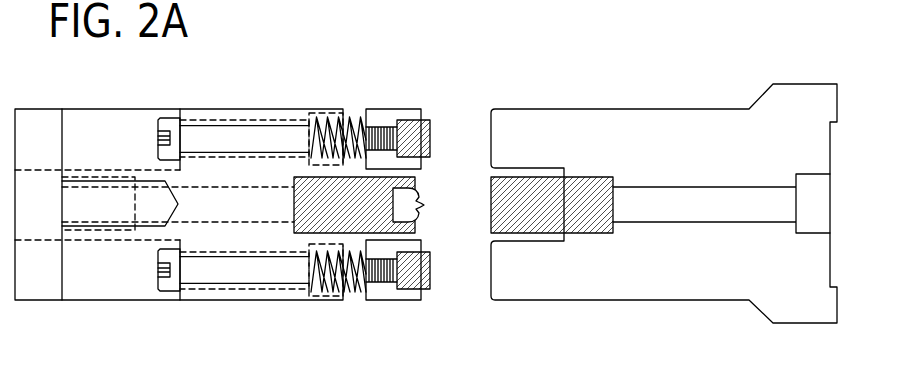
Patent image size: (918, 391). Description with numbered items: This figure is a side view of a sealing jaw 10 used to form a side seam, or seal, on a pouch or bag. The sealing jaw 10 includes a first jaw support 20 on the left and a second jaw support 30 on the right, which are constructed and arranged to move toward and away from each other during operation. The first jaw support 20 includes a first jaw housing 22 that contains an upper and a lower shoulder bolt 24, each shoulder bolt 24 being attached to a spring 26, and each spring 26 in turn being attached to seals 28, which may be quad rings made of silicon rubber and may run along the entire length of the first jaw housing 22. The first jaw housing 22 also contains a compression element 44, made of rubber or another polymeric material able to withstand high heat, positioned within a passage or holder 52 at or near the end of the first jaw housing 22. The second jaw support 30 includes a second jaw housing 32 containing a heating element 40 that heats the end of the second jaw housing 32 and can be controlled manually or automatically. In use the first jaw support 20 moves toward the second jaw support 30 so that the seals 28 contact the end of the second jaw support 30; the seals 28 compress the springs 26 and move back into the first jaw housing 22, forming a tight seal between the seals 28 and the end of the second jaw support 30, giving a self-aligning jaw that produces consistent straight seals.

The sealing jaw 10 is at (664, 197).
The first jaw support 20 is at (179, 231).
The first jaw housing 22 is at (122, 283).
The shoulder bolt 24 is at (218, 133).
The spring 26 is at (352, 120).
The seal 28 is at (427, 125).
The second jaw support 30 is at (690, 270).
The second jaw housing 32 is at (632, 283).
The heating element 40 is at (527, 200).
The compression element 44 is at (410, 211).
The holder 52 is at (398, 263).